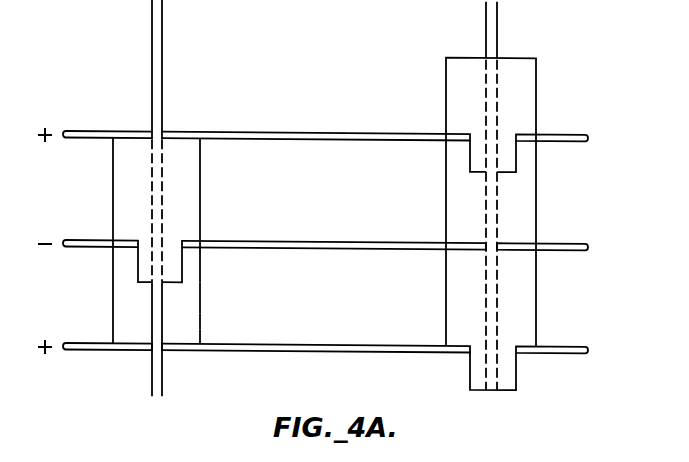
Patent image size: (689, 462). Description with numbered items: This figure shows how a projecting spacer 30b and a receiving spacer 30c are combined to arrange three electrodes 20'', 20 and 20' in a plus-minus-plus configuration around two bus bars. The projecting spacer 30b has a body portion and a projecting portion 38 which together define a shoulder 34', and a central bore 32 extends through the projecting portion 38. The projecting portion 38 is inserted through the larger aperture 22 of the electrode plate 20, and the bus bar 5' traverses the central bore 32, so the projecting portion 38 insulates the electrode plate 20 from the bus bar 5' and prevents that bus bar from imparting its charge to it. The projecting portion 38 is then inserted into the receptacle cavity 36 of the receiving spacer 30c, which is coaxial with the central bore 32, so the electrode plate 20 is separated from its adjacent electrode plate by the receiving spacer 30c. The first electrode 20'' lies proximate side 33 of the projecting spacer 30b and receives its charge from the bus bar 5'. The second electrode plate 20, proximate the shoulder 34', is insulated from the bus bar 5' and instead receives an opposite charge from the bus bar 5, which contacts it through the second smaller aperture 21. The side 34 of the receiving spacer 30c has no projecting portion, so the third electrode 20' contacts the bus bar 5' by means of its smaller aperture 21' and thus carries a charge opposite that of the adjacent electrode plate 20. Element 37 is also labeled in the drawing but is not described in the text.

The bus bar 5' is at (175, 66).
The bus bar 5 is at (504, 30).
The first electrode 20'' is at (325, 141).
The electrode plate 20 is at (325, 234).
The electrode 20' is at (325, 355).
The second smaller aperture 21 is at (540, 225).
The smaller aperture 21' is at (132, 339).
The larger aperture 22 is at (145, 246).
The projecting spacer 30b is at (203, 153).
The receiving spacer 30c is at (202, 292).
The central bore 32 is at (173, 180).
The side 33 is at (126, 139).
The side 34 is at (218, 335).
The shoulder 34' is at (203, 247).
The receptacle cavity 36 is at (134, 264).
The housing wall 37 is at (202, 312).
The projecting portion 38 is at (182, 266).